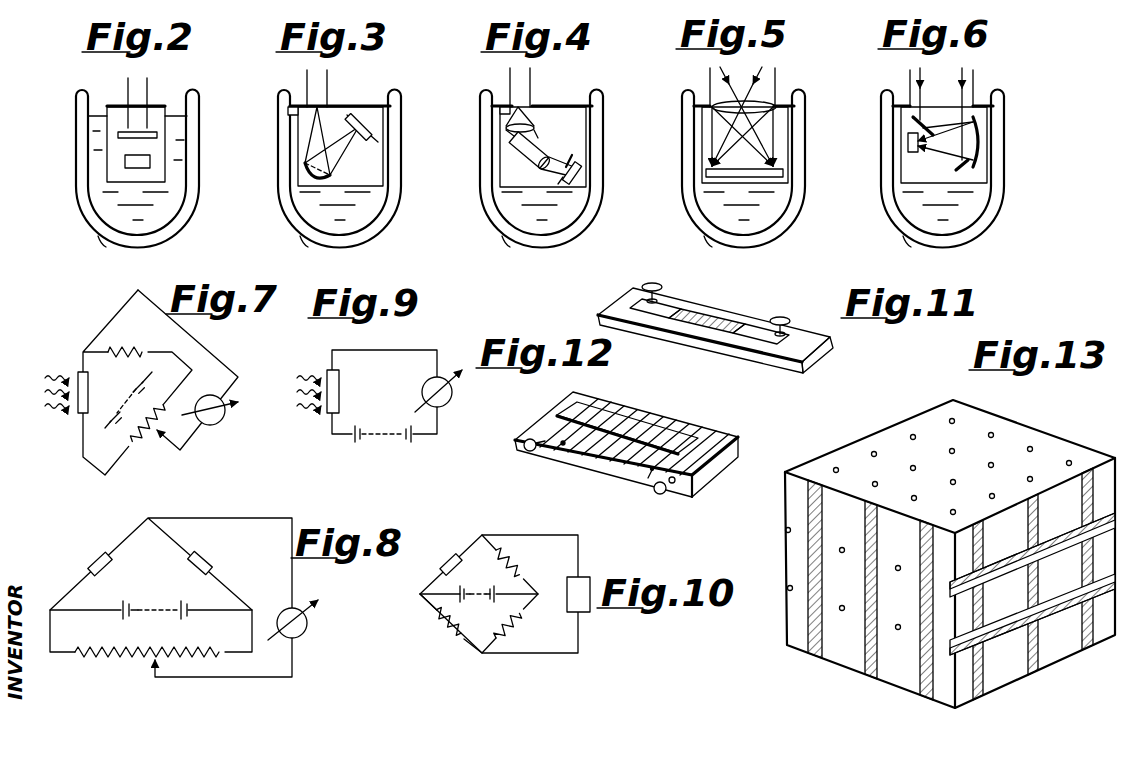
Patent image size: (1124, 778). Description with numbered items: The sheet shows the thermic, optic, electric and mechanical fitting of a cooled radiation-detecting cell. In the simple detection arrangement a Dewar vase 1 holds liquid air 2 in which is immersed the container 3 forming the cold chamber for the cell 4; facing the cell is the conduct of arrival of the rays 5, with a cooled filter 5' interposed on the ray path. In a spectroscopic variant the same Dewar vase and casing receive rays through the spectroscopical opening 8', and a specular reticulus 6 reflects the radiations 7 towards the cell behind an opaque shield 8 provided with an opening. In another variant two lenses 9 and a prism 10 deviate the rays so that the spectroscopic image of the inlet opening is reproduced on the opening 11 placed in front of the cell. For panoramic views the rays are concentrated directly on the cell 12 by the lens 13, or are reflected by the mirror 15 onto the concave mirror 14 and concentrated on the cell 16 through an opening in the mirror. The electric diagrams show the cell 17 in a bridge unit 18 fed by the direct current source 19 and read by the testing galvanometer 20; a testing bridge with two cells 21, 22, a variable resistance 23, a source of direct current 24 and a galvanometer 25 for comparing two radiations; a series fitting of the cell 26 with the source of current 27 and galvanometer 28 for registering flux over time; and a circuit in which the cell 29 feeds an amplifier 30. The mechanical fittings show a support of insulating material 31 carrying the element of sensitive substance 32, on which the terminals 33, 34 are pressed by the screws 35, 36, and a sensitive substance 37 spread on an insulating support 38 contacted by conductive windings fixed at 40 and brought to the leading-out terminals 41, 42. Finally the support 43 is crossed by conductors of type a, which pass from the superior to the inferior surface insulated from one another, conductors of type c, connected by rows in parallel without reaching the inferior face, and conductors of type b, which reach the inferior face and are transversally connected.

In FIG. 2, the Dewar vase 1 is at (195, 188).
In FIG. 3, the Dewar vase 1 is at (400, 114).
In FIG. 4, the Dewar vase 1 is at (605, 115).
In FIG. 5, the Dewar vase 1 is at (807, 105).
In FIG. 6, the Dewar vase 1 is at (1005, 110).
In FIG. 2, the liquid air 2 is at (178, 133).
In FIG. 3, the liquid air 2 is at (366, 222).
In FIG. 4, the liquid air 2 is at (573, 217).
In FIG. 5, the liquid air 2 is at (775, 210).
In FIG. 6, the liquid air 2 is at (978, 200).
In FIG. 2, the container 3 is at (153, 108).
In FIG. 3, the container 3 is at (380, 165).
In FIG. 2, the cell 4 is at (125, 162).
In FIG. 3, the cell 4 is at (358, 123).
In FIG. 4, the cell 4 is at (573, 178).
In FIG. 2, the conduct of arrival of the rays 5 is at (121, 97).
In FIG. 2, the filter 5' is at (100, 126).
In FIG. 3, the specular reticulus 6 is at (305, 178).
In FIG. 3, the radiations 7 is at (305, 145).
In FIG. 3, the opaque shield 8 is at (333, 99).
In FIG. 3, the spectroscopical opening 8' is at (273, 110).
In FIG. 4, the spectroscopical opening 8' is at (493, 89).
In FIG. 4, the lenses 9 is at (550, 152).
In FIG. 4, the prism 10 is at (522, 147).
In FIG. 4, the opening 11 is at (570, 158).
In FIG. 5, the cell 12 is at (708, 172).
In FIG. 5, the lens 13 is at (753, 100).
In FIG. 6, the concave mirror 14 is at (980, 155).
In FIG. 6, the mirror 15 is at (915, 122).
In FIG. 6, the cell 16 is at (910, 145).
In FIG. 7, the cell 17 is at (78, 371).
In FIG. 7, the bridge unit 18 is at (169, 372).
In FIG. 7, the direct current source 19 is at (123, 403).
In FIG. 12, the direct current source 19 is at (563, 445).
In FIG. 7, the testing galvanometer 20 is at (213, 417).
In FIG. 8, the cell 21 is at (202, 562).
In FIG. 8, the cell 22 is at (100, 558).
In FIG. 8, the variable resistance 23 is at (113, 655).
In FIG. 8, the source of direct current 24 is at (143, 608).
In FIG. 8, the galvanometer 25 is at (303, 632).
In FIG. 9, the cell 26 is at (333, 412).
In FIG. 9, the source of current 27 is at (387, 437).
In FIG. 9, the galvanometer 28 is at (445, 395).
In FIG. 10, the cell 29 is at (450, 561).
In FIG. 10, the amplifier 30 is at (582, 580).
In FIG. 11, the support of insulating material 31 is at (727, 312).
In FIG. 11, the element of sensitive substance 32 is at (708, 327).
In FIG. 11, the terminal 33 is at (668, 310).
In FIG. 11, the terminal 34 is at (763, 332).
In FIG. 11, the screw 35 is at (657, 285).
In FIG. 11, the screw 36 is at (783, 316).
In FIG. 12, the sensitive substance 37 is at (720, 430).
In FIG. 12, the insulating support 38 is at (703, 453).
In FIG. 12, the fixing point of winding 40 is at (650, 475).
In FIG. 12, the leading-out terminal 41 is at (662, 493).
In FIG. 12, the leading-out terminal 42 is at (528, 449).
In FIG. 13, the support 43 is at (1053, 589).
In FIG. 13, the conductors of type a is at (865, 676).
In FIG. 13, the conductors of type b is at (1093, 636).
In FIG. 13, the conductors of type c is at (1115, 530).